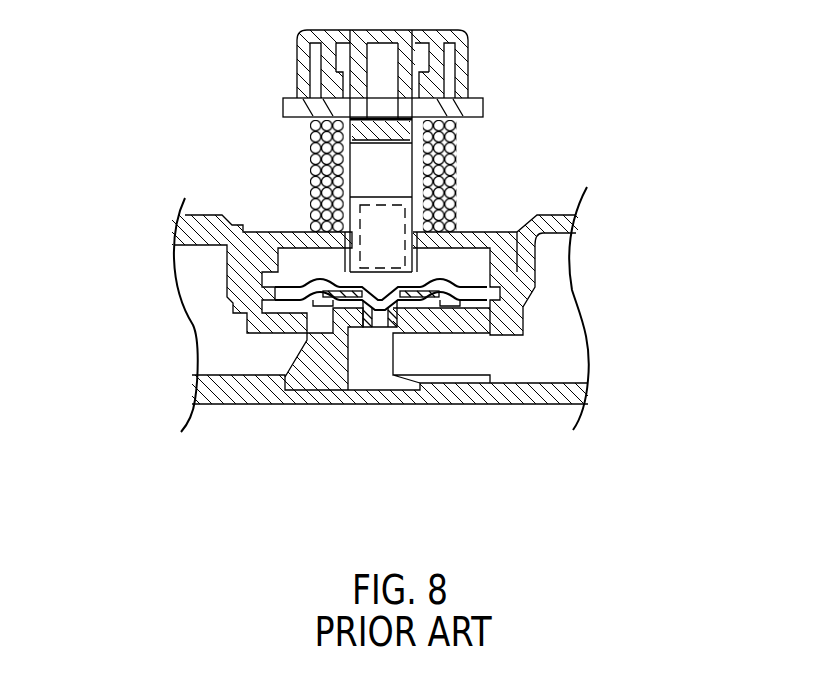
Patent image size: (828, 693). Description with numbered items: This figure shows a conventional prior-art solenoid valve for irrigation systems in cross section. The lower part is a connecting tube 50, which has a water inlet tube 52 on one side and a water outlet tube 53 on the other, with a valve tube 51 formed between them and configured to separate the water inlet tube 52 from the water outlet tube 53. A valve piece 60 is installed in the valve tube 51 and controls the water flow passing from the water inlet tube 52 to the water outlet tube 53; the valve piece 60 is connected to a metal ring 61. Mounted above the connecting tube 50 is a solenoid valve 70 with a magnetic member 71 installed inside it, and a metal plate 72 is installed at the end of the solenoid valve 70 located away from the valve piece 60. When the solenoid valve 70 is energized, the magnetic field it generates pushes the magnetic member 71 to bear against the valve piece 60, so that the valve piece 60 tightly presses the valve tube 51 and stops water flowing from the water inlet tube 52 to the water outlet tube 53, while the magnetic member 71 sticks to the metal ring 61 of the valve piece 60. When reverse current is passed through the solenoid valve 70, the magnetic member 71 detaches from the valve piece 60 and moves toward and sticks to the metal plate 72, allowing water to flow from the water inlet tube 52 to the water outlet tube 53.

The connecting tube 50 is at (533, 412).
The valve tube 51 is at (210, 340).
The water inlet tube 52 is at (557, 343).
The water outlet tube 53 is at (333, 333).
The valve piece 60 is at (318, 272).
The metal ring 61 is at (422, 297).
The solenoid valve 70 is at (308, 130).
The magnetic member 71 is at (415, 200).
The metal plate 72 is at (388, 120).